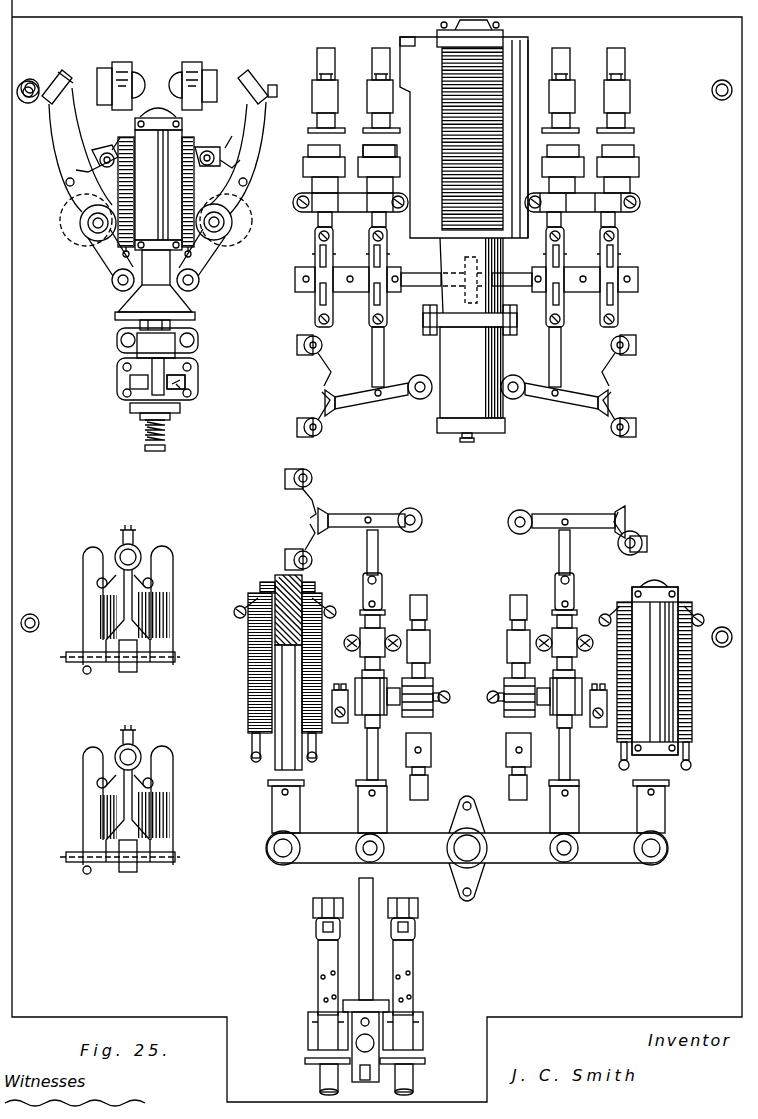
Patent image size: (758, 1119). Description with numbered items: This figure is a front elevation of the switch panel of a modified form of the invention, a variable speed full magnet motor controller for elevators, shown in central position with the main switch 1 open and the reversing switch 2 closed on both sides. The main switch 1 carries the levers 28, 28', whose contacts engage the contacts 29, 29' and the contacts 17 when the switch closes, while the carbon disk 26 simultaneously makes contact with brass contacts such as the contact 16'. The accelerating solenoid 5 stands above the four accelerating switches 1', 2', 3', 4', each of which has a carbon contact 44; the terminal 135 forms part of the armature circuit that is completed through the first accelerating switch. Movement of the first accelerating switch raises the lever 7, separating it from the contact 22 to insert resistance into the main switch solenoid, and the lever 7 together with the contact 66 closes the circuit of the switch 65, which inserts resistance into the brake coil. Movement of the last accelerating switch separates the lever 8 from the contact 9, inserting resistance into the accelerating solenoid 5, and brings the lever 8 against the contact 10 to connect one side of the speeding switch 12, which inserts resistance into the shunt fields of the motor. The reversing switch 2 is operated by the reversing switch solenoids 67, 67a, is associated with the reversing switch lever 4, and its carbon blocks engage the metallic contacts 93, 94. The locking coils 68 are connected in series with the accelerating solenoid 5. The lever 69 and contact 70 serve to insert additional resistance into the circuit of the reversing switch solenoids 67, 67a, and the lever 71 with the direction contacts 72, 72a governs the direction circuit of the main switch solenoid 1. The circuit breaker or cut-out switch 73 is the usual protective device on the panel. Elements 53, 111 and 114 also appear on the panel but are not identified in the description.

The main switch 1 is at (156, 182).
The main switch lever 28 is at (75, 180).
The main switch lever 28' is at (235, 180).
The contact 17 is at (106, 150).
The contact 29 is at (128, 76).
The contact 29' is at (195, 72).
The carbon disk 26 is at (180, 400).
The contact 10 is at (128, 382).
The brass contact 16' is at (201, 381).
The accelerating solenoid 5 is at (464, 231).
The carbon contact 44 is at (395, 150).
The accelerating switch 2' is at (324, 120).
The accelerating switch 1' is at (379, 120).
The accelerating switch 4' is at (563, 120).
The accelerating switch 3' is at (626, 120).
The terminal 135 is at (368, 125).
The lever 7 is at (365, 398).
The lever 8 is at (565, 398).
The contact 66 is at (310, 352).
The contact 22 is at (298, 408).
The contact 9 is at (642, 400).
The speeding switch 12 is at (82, 612).
The switch 65 is at (80, 818).
The lever 71 is at (390, 515).
The direction contact 72 is at (300, 503).
The direction contact 72a is at (305, 535).
The lever 69 is at (583, 518).
The contact 70 is at (640, 530).
The reversing switch 2 is at (464, 681).
The valve 53 is at (435, 688).
The metallic contact 93 is at (468, 698).
The metallic contact 94 is at (435, 665).
The block 114 is at (340, 723).
The block 111 is at (598, 727).
The reversing switch solenoid 67 is at (247, 685).
The locking coil 68 is at (238, 605).
The reversing switch solenoid 67a is at (692, 712).
The reversing switch lever 4 is at (467, 850).
The circuit breaker 73 is at (400, 970).